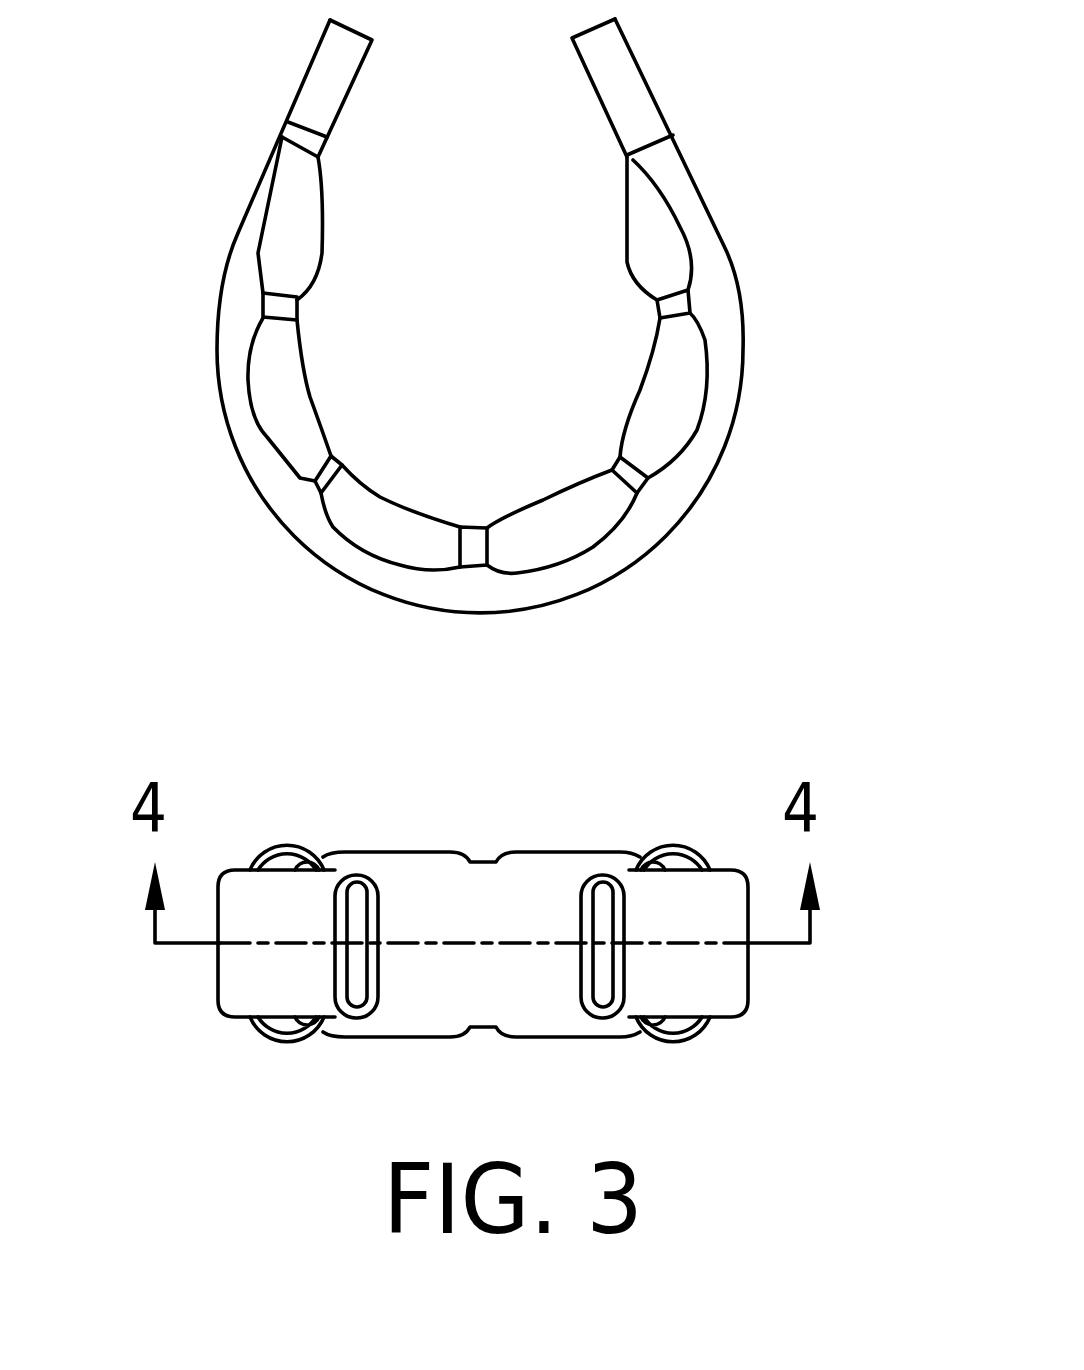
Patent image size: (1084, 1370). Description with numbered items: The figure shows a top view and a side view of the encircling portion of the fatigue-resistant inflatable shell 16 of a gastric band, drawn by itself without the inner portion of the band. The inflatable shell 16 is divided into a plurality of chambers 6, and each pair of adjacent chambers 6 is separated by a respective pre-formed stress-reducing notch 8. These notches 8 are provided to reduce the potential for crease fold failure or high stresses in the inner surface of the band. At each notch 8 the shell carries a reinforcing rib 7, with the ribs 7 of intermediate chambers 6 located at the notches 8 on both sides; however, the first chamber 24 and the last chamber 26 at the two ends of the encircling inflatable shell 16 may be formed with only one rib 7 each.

The chamber 6 is at (549, 522).
The reinforcing rib 7 is at (260, 310).
The stress-reducing notch 8 is at (350, 452).
The inflatable shell 16 is at (368, 520).
The first chamber 24 is at (648, 212).
The last chamber 26 is at (300, 229).